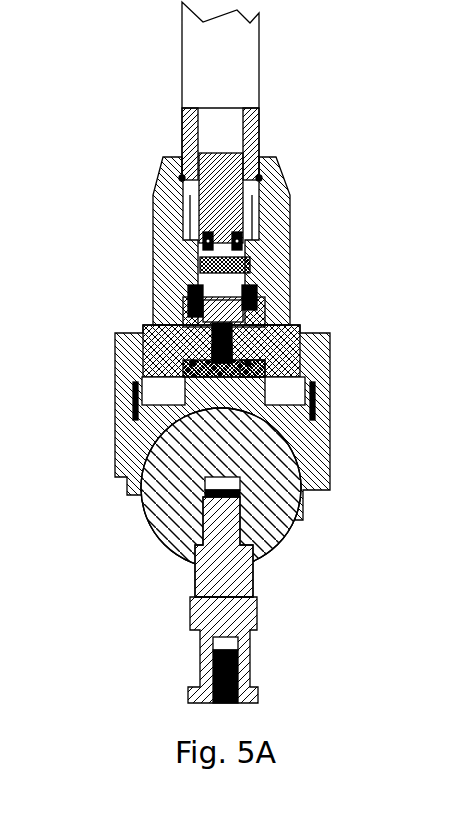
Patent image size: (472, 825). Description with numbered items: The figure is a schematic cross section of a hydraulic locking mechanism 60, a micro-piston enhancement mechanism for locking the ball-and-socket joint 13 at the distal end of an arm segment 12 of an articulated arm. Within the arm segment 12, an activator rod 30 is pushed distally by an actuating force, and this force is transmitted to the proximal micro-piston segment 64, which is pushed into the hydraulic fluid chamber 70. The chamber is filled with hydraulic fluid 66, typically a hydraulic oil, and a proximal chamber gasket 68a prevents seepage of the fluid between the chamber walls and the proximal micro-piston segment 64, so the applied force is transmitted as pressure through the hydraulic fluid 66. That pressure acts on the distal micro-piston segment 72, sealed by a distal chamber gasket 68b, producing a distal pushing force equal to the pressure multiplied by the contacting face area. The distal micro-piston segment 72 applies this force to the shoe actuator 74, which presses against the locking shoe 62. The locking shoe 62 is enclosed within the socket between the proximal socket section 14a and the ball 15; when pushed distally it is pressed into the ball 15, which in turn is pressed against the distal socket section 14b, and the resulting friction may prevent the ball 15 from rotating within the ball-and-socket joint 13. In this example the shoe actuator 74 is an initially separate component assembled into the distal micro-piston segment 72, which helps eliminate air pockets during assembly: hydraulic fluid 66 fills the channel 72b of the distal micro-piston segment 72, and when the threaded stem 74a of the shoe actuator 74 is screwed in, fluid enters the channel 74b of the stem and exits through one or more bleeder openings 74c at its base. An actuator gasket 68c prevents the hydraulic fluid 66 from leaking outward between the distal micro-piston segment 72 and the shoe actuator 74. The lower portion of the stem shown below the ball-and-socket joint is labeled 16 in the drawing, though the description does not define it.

The arm segment 12 is at (255, 70).
The activator rod 30 is at (197, 138).
The proximal socket section 14a is at (165, 160).
The proximal micro-piston segment 64 is at (220, 218).
The hydraulic locking mechanism 60 is at (348, 192).
The hydraulic fluid chamber 70 is at (193, 268).
The proximal chamber gasket 68a is at (240, 243).
The channel 72b is at (217, 308).
The hydraulic fluid 66 is at (237, 275).
The distal micro-piston segment 72 is at (197, 330).
The distal chamber gasket 68b is at (255, 315).
The threaded stem 74a is at (200, 335).
The bleeder opening 74c is at (205, 351).
The channel 74b is at (223, 345).
The actuator gasket 68c is at (252, 362).
The locking shoe 62 is at (173, 410).
The shoe actuator 74 is at (242, 372).
The distal socket section 14b is at (115, 452).
The ball-and-socket joint 13 is at (110, 540).
The ball 15 is at (267, 528).
The lower stem 16 is at (253, 613).